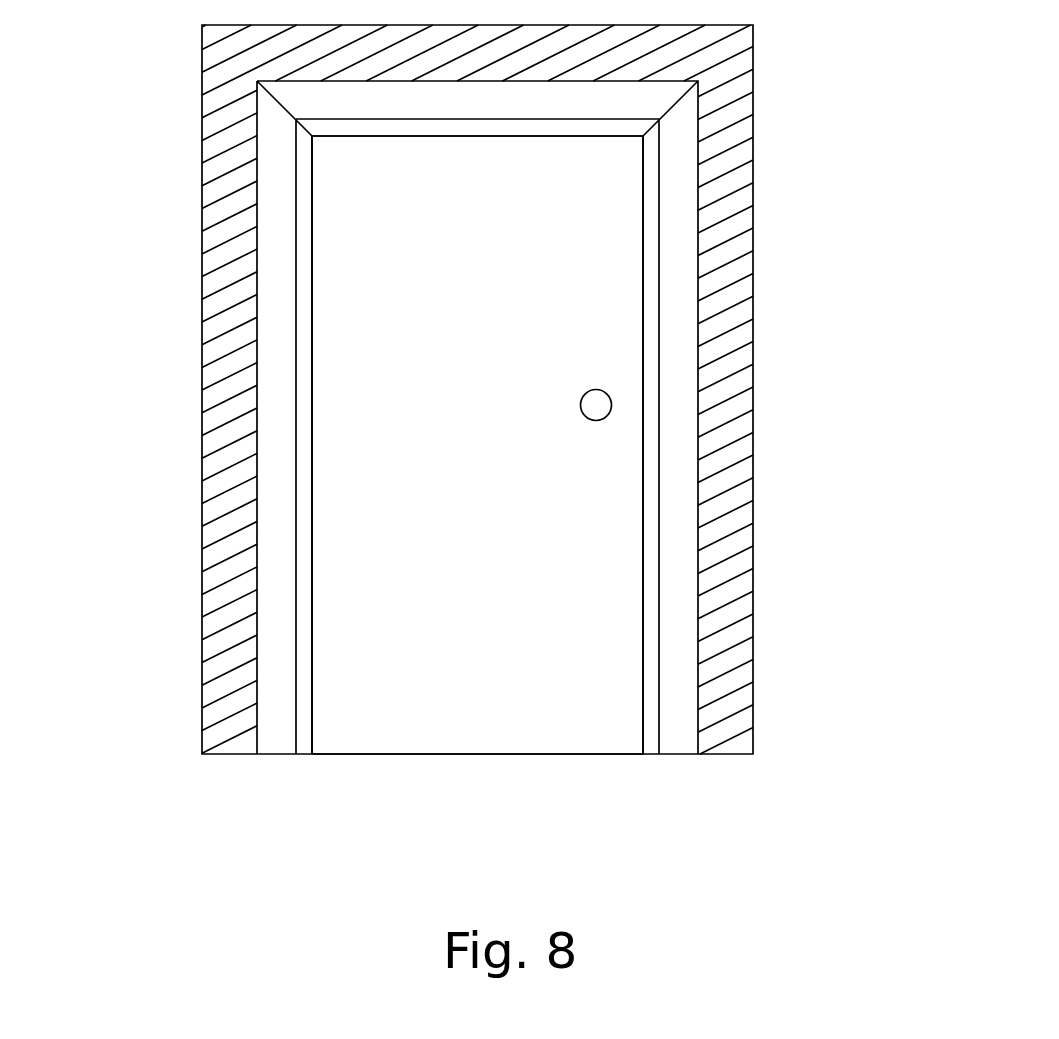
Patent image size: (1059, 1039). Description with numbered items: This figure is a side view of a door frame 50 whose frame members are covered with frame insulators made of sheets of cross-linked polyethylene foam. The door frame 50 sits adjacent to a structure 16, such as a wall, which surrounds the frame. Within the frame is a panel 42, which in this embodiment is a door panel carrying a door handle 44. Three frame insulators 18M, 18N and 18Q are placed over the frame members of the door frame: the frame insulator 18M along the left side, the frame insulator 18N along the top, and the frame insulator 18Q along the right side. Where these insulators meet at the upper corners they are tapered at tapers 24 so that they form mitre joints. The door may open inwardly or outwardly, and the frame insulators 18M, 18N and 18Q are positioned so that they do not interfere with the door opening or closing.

The structure 16 is at (202, 203).
The tapers 24 is at (283, 107).
The frame insulator 18N is at (477, 137).
The frame insulator 18M is at (312, 477).
The frame insulator 18Q is at (642, 718).
The panel 42 is at (461, 356).
The door handle 44 is at (600, 420).
The door frame 50 is at (461, 479).